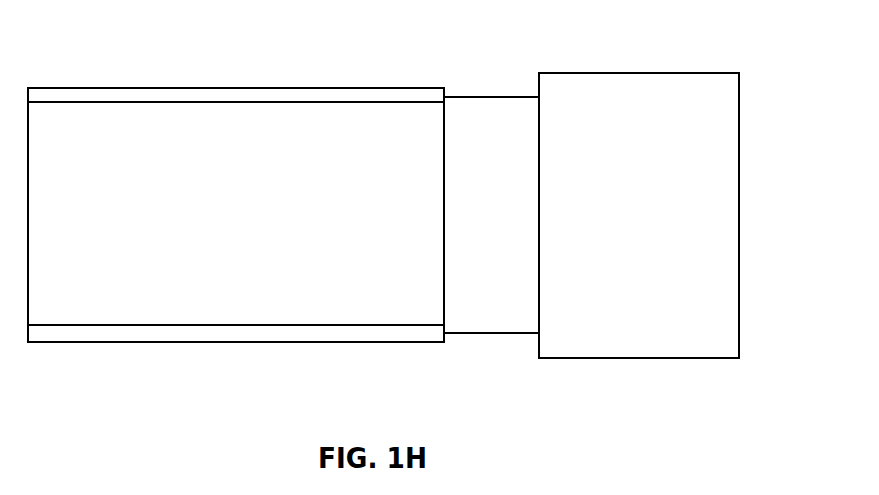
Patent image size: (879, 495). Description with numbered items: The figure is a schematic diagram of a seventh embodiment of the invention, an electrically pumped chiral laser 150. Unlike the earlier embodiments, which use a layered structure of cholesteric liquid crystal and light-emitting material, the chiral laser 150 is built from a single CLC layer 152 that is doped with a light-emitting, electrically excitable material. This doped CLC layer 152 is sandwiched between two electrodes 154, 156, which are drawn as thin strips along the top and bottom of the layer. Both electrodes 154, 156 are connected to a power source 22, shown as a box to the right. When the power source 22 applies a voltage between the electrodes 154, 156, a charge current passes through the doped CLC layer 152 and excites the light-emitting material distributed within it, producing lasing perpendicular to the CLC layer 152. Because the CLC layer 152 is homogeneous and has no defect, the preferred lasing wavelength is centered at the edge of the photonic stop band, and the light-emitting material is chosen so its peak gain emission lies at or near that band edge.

The chiral laser 150 is at (438, 212).
The CLC layer 152 is at (237, 230).
The electrode 154 is at (252, 97).
The electrode 156 is at (253, 332).
The power source 22 is at (739, 295).